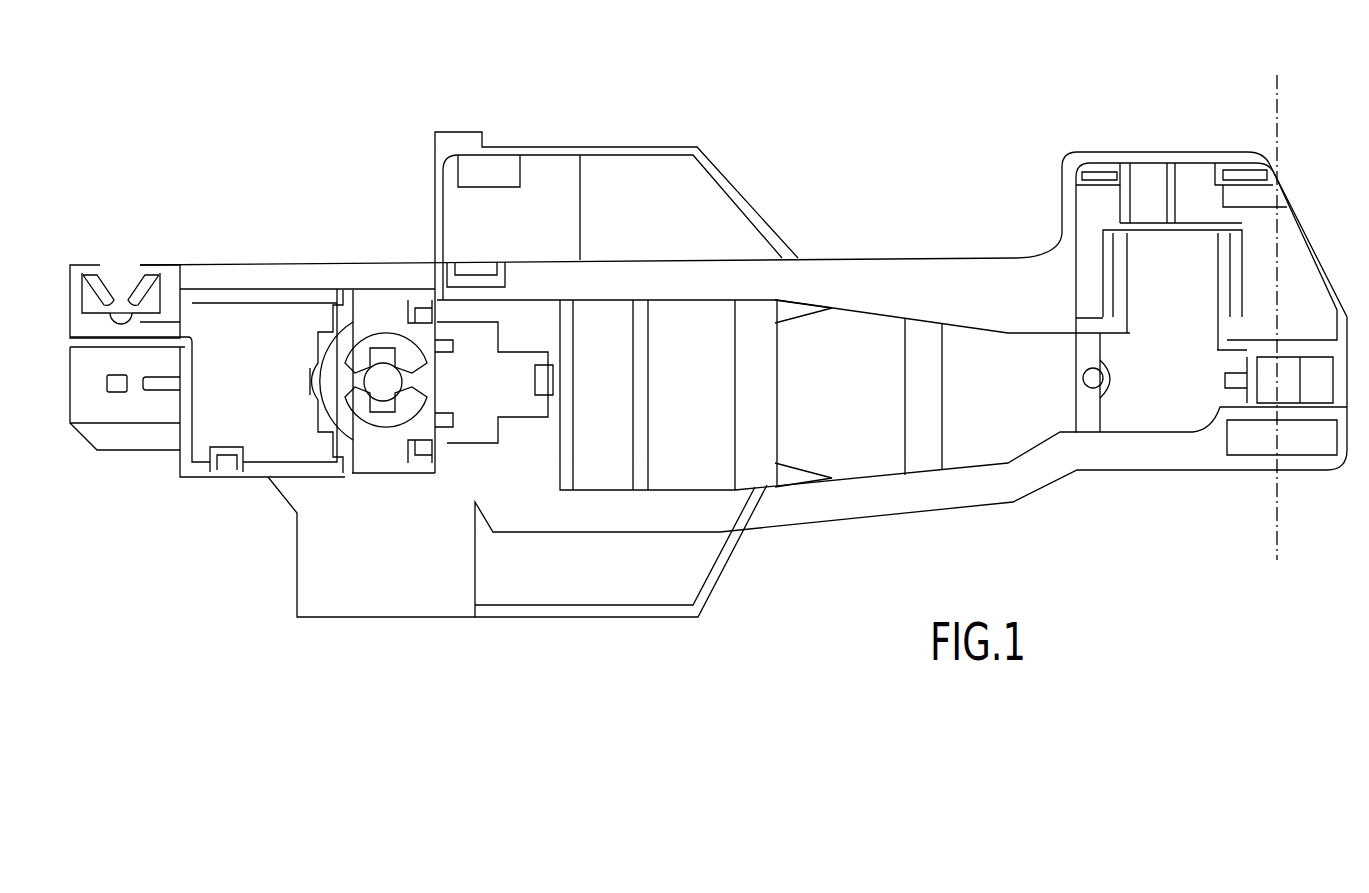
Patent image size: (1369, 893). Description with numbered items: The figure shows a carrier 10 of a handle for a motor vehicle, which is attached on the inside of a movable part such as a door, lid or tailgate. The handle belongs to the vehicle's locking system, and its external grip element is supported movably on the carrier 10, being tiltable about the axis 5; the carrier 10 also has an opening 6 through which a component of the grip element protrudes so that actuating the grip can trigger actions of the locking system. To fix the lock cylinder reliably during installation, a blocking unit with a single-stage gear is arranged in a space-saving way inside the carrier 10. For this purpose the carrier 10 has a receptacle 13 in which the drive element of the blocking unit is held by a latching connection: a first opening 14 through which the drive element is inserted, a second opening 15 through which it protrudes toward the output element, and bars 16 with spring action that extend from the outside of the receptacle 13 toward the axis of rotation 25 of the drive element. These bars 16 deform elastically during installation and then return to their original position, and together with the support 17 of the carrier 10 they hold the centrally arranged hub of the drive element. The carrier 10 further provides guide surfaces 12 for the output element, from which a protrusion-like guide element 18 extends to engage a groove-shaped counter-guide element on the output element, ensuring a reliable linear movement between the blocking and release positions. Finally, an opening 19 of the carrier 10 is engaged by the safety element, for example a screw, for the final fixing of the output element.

The carrier 10 is at (743, 374).
The axis 5 is at (1275, 83).
The receptacle 13 is at (148, 243).
The first opening 14 is at (108, 293).
The bars with spring action 16 is at (123, 292).
The support 17 is at (110, 318).
The axis of rotation 25 is at (120, 313).
The second opening 15 is at (107, 346).
The opening 19 is at (113, 392).
The guide element 18 is at (160, 390).
The guide surfaces 12 is at (270, 392).
The opening 6 is at (502, 387).